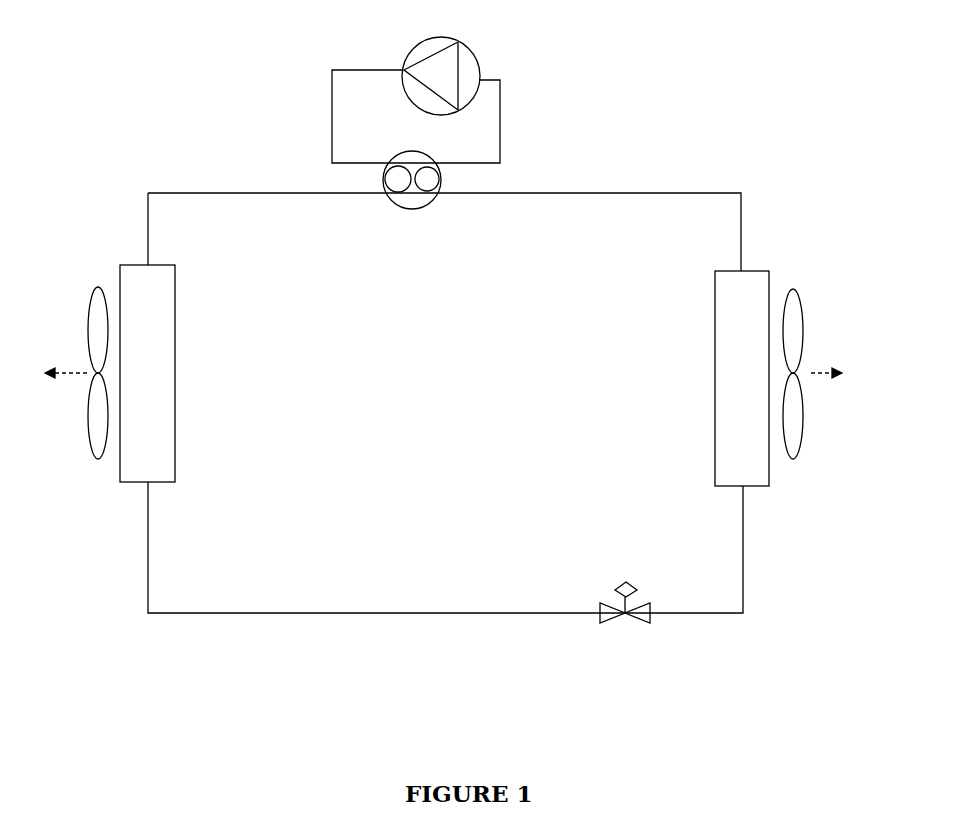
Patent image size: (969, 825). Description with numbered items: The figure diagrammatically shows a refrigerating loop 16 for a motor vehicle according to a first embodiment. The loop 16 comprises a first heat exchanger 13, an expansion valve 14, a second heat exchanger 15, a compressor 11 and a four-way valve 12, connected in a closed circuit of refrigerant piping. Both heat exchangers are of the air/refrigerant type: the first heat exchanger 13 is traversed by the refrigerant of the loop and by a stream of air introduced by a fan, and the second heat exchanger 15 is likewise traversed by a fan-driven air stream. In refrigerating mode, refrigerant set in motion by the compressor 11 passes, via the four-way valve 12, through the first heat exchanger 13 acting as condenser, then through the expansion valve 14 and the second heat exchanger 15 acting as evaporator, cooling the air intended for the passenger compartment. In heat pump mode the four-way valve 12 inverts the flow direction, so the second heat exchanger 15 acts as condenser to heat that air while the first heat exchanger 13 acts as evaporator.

The compressor 11 is at (487, 55).
The four-way valve 12 is at (427, 218).
The first heat exchanger 13 is at (180, 477).
The expansion valve 14 is at (652, 632).
The second heat exchanger 15 is at (777, 473).
The refrigerating loop 16 is at (644, 184).